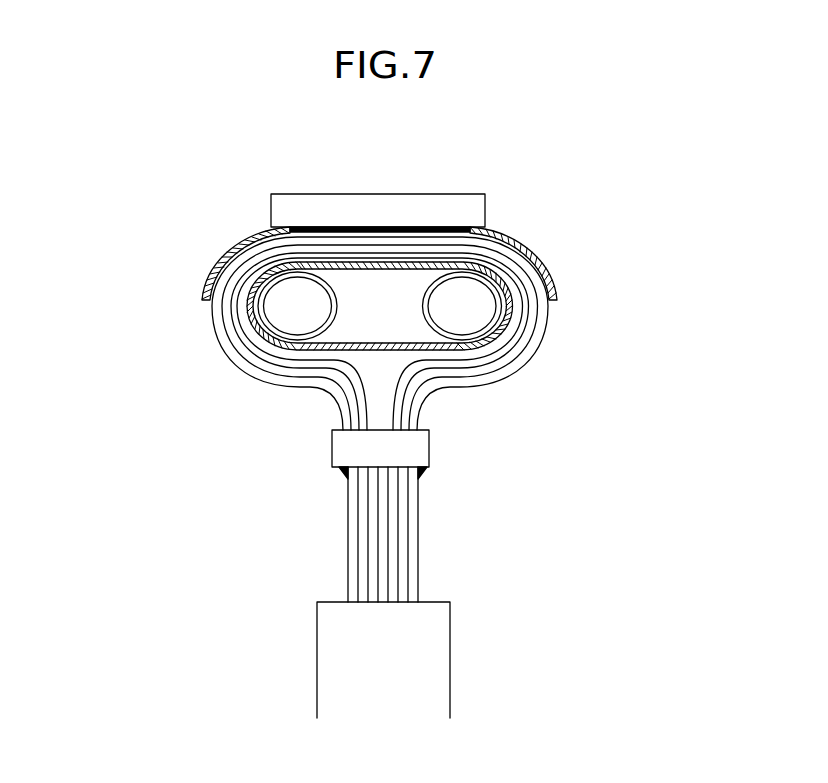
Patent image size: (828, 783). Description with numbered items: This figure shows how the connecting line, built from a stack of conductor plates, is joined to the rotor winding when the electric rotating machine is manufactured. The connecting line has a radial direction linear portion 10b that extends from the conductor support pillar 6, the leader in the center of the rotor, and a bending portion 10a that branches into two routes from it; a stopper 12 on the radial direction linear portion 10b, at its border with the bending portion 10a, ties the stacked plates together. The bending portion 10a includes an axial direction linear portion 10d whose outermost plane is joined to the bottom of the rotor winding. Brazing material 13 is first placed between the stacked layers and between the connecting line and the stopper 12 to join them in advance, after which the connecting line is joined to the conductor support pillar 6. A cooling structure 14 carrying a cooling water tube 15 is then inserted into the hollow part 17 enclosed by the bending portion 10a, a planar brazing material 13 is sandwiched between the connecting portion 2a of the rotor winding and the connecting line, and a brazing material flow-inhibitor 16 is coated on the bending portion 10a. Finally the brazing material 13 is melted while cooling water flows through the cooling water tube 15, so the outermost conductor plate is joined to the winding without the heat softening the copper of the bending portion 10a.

The connecting portion 2a is at (415, 194).
The conductor support pillar 6 is at (420, 665).
The bending portion 10a is at (609, 228).
The radial direction linear portion 10b is at (609, 450).
The axial direction linear portion 10d is at (245, 235).
The stopper 12 is at (430, 450).
The brazing material 13 is at (327, 228).
The cooling structure 14 is at (405, 352).
The cooling water tube 15 is at (297, 317).
The brazing material flow-inhibitor 16 is at (520, 235).
The hollow part 17 is at (363, 365).